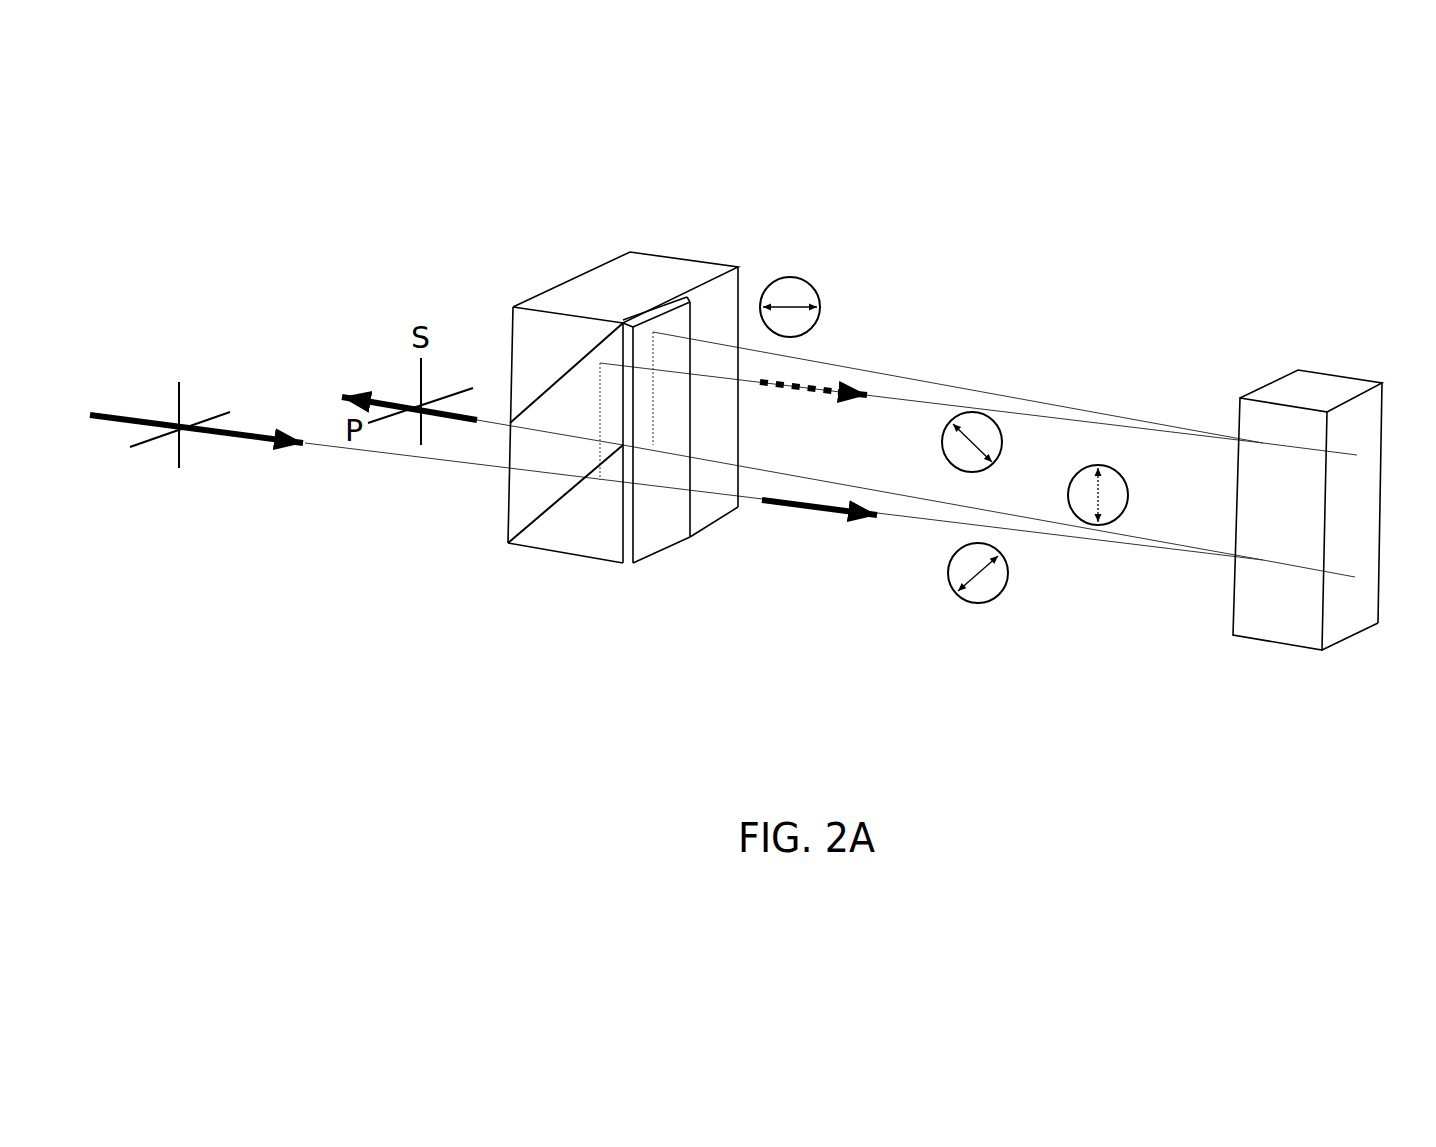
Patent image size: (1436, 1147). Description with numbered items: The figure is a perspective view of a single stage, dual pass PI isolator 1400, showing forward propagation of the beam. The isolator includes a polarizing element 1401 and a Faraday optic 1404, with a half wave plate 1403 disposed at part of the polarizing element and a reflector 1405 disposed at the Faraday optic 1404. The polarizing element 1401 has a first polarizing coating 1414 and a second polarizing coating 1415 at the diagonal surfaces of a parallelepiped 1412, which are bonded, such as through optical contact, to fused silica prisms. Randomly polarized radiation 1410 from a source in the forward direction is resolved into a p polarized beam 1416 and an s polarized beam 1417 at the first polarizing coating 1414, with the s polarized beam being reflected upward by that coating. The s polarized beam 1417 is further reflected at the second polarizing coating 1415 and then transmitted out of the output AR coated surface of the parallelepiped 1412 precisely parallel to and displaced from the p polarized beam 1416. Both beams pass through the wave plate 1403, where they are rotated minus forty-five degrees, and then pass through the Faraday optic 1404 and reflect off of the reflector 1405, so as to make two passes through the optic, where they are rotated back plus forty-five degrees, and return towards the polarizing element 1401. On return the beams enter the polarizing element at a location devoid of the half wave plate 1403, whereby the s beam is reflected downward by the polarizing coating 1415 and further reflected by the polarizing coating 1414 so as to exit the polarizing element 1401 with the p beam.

The single stage, dual pass PI isolator 1400 is at (330, 583).
The polarizing element 1401 is at (555, 414).
The half wave plate 1403 is at (640, 525).
The Faraday optic 1404 is at (1310, 528).
The reflector 1405 is at (1360, 443).
The randomly polarized radiation 1410 is at (185, 439).
The parallelepiped 1412 is at (503, 515).
The first polarizing coating 1414 is at (542, 510).
The second polarizing coating 1415 is at (550, 383).
The p polarized beam 1416 is at (945, 534).
The s polarized beam 1417 is at (881, 374).